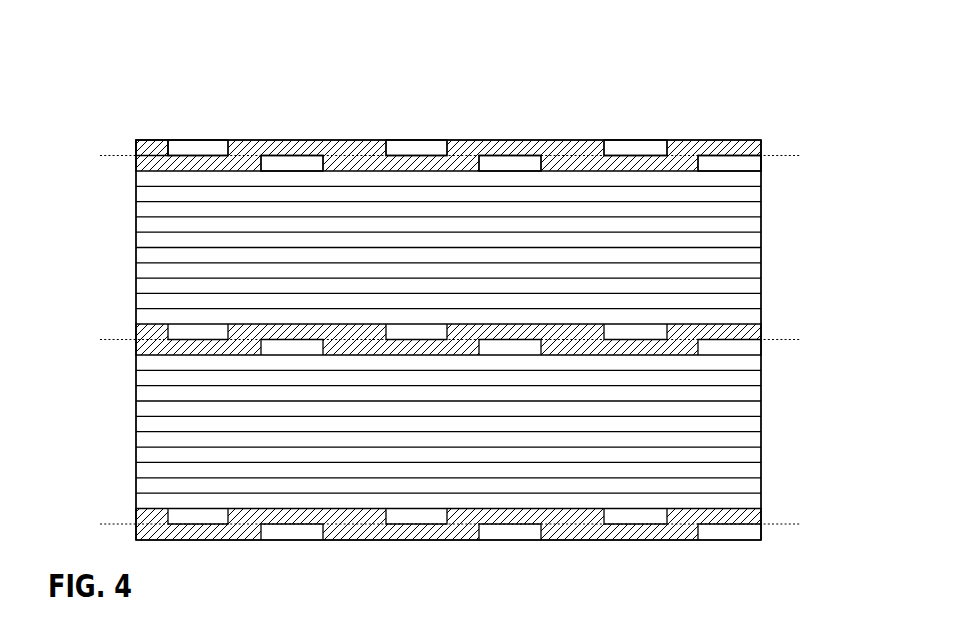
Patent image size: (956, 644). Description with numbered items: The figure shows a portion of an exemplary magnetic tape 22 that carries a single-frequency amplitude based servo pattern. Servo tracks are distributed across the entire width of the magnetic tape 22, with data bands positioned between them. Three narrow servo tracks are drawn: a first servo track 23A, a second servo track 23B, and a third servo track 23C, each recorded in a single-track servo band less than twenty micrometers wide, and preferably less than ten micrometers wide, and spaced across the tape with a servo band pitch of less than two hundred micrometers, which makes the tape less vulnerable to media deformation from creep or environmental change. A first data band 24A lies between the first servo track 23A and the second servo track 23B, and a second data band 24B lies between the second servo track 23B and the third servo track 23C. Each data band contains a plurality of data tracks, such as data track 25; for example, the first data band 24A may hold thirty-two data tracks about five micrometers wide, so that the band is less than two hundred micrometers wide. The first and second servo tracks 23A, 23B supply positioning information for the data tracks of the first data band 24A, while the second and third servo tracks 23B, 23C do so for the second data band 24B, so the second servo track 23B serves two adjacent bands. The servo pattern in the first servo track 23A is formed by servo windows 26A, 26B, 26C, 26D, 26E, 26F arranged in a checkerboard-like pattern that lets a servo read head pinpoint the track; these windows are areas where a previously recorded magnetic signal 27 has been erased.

The magnetic tape 22 is at (150, 59).
The first servo track 23A is at (792, 156).
The second servo track 23B is at (792, 340).
The third servo track 23C is at (792, 524).
The first data band 24A is at (122, 172).
The second data band 24B is at (122, 355).
The data track 25 is at (766, 226).
The servo window 26A is at (198, 139).
The servo window 26B is at (292, 148).
The servo window 26C is at (418, 139).
The servo window 26D is at (510, 150).
The servo window 26E is at (636, 139).
The servo window 26F is at (729, 151).
The previously recorded magnetic signal 27 is at (142, 140).